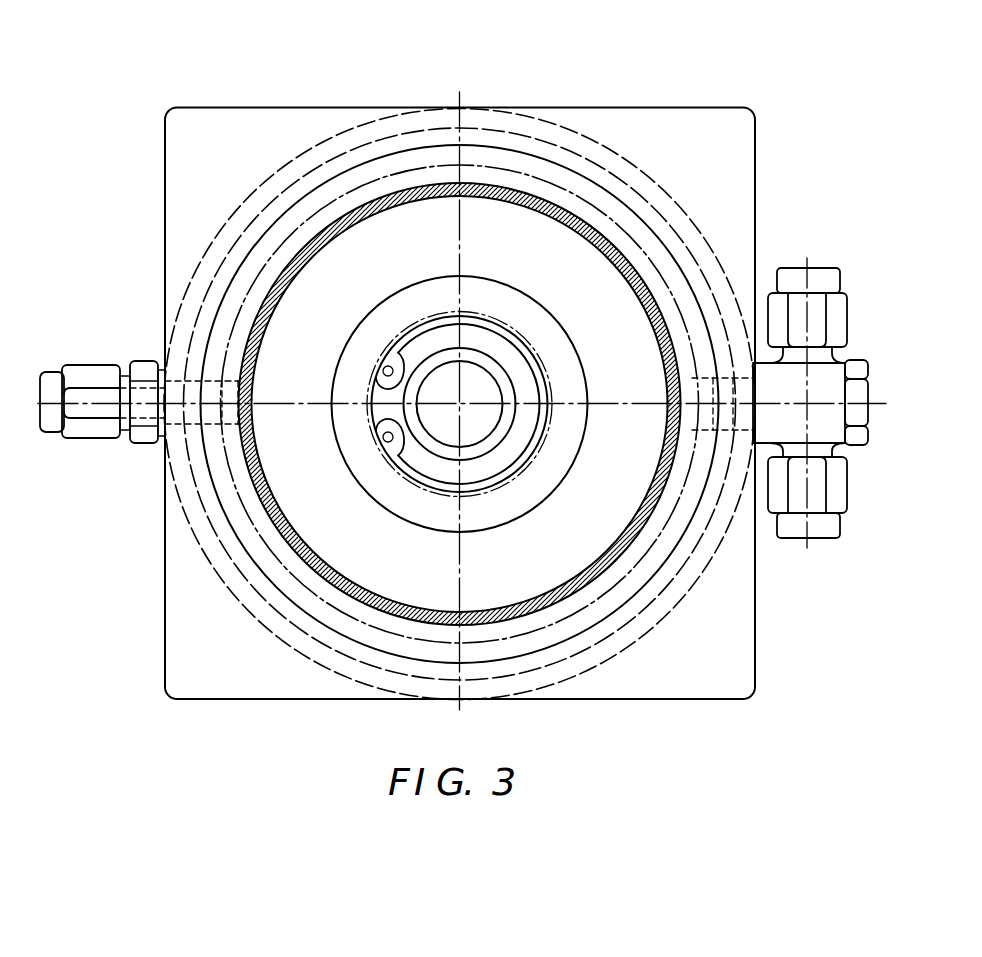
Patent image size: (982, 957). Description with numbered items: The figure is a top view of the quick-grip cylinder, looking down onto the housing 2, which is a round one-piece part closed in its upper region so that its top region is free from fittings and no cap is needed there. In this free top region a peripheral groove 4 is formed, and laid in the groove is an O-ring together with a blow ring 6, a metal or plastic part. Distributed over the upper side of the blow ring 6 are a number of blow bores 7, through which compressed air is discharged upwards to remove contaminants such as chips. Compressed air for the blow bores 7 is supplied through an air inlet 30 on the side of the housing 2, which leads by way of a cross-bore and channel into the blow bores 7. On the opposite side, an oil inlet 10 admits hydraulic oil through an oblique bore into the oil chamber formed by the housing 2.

The housing 2 is at (632, 135).
The peripheral groove 4 is at (347, 176).
The blow ring 6 is at (385, 177).
The blow bores 7 is at (625, 223).
The oil inlet 10 is at (818, 387).
The air inlet 30 is at (80, 373).